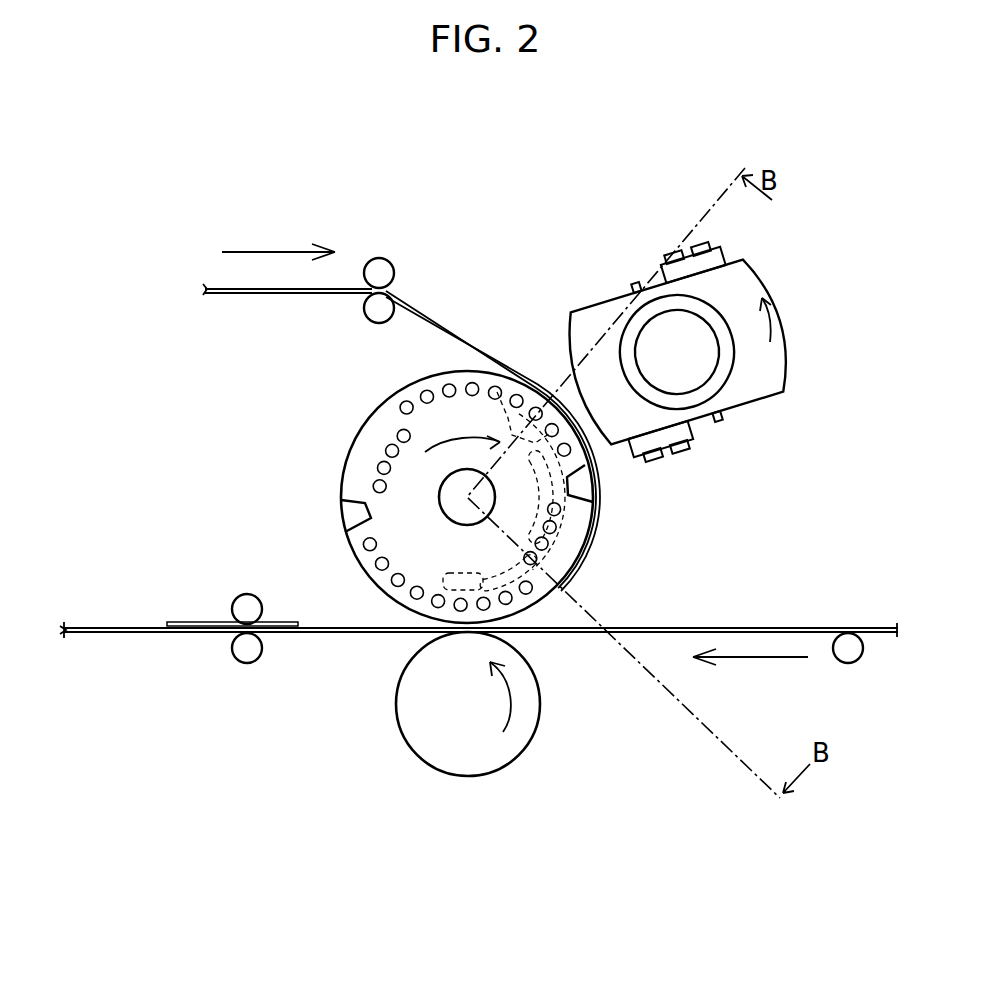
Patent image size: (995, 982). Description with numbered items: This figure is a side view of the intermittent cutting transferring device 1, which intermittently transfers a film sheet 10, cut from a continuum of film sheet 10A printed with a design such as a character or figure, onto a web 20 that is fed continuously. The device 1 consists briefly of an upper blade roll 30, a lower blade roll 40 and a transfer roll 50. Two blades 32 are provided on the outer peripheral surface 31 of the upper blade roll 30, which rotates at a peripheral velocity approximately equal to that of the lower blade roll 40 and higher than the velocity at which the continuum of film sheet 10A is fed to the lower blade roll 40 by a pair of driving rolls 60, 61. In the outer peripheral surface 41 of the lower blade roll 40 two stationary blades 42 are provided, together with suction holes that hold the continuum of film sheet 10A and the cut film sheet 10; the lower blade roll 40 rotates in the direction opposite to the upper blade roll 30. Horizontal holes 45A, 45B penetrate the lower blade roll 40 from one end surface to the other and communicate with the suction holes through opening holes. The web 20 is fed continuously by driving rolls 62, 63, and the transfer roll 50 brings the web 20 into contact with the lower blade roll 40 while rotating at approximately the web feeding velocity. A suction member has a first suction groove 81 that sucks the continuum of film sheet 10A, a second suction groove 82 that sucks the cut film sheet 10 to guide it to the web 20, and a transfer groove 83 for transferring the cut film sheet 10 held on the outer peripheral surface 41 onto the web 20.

The intermittent cutting transferring device 1 is at (80, 240).
The film sheet 10 is at (594, 538).
The continuum of film sheet 10A is at (437, 322).
The web 20 is at (742, 626).
The upper blade roll 30 is at (783, 304).
The outer peripheral surface 31 is at (630, 289).
The blade 32 is at (748, 250).
The lower blade roll 40 is at (337, 416).
The outer peripheral surface 41 is at (384, 403).
The stationary blade 42 is at (345, 520).
The horizontal hole 45A is at (500, 388).
The horizontal hole 45B is at (380, 468).
The transfer roll 50 is at (437, 753).
The driving roll 60 is at (380, 270).
The driving roll 61 is at (372, 310).
The driving roll 62 is at (244, 604).
The driving roll 63 is at (247, 656).
The first suction groove 81 is at (603, 478).
The second suction groove 82 is at (533, 600).
The transfer groove 83 is at (405, 600).